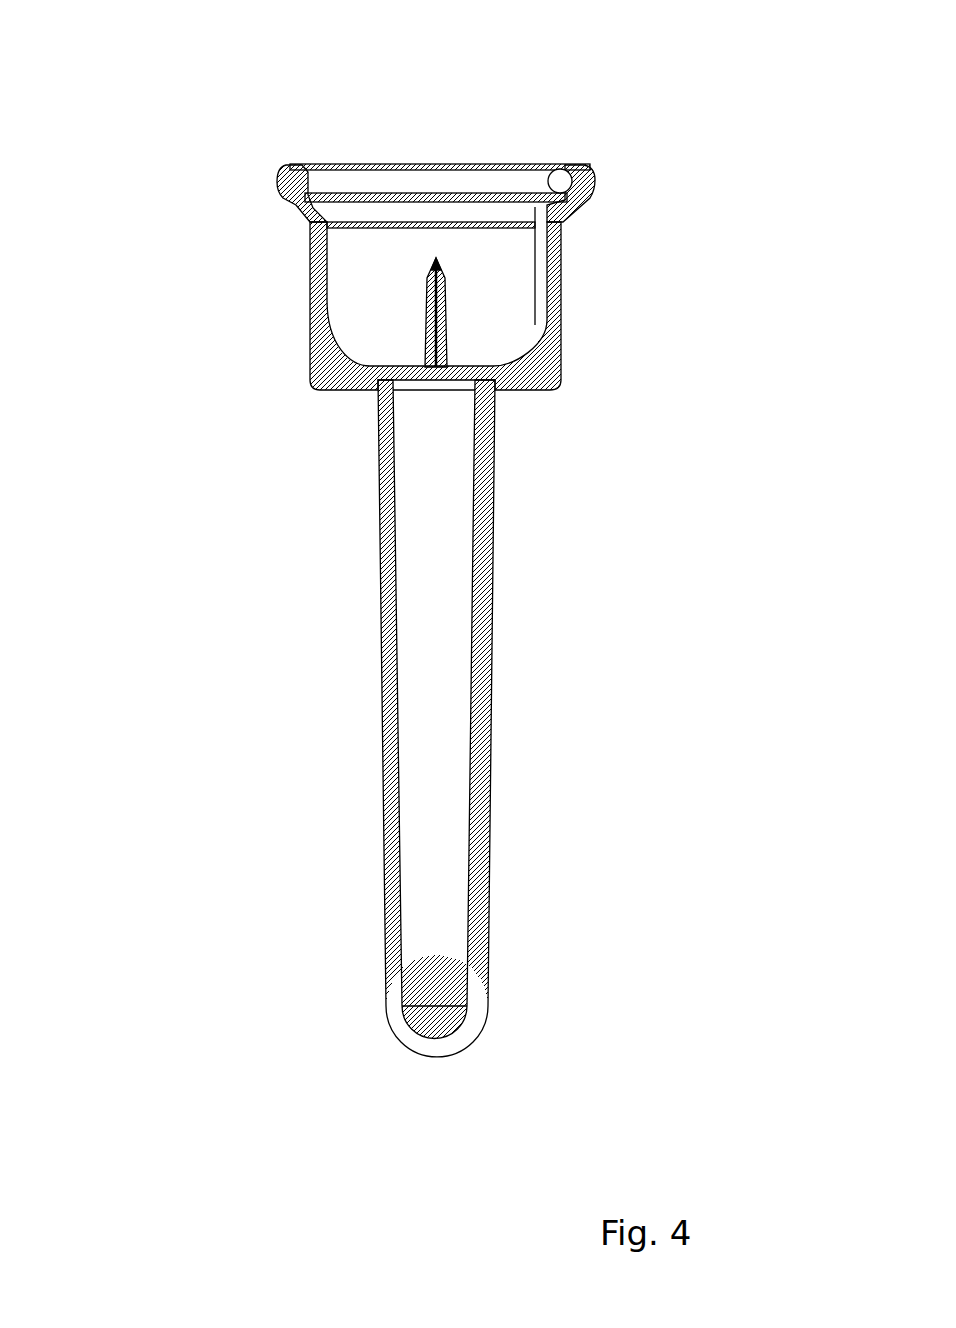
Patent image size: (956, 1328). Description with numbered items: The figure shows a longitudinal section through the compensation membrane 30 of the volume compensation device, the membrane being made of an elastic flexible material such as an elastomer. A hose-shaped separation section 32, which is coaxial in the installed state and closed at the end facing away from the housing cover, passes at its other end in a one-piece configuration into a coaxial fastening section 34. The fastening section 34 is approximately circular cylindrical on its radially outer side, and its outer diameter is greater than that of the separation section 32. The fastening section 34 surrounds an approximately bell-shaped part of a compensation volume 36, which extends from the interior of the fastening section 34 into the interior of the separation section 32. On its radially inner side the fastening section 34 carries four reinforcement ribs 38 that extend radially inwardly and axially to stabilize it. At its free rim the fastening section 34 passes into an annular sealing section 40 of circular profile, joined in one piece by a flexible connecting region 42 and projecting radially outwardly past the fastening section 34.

The compensation membrane 30 is at (371, 528).
The separation section 32 is at (490, 665).
The fastening section 34 is at (304, 300).
The compensation volume 36 is at (515, 313).
The reinforcement ribs 38 is at (442, 300).
The sealing section 40 is at (585, 175).
The flexible connecting region 42 is at (572, 212).